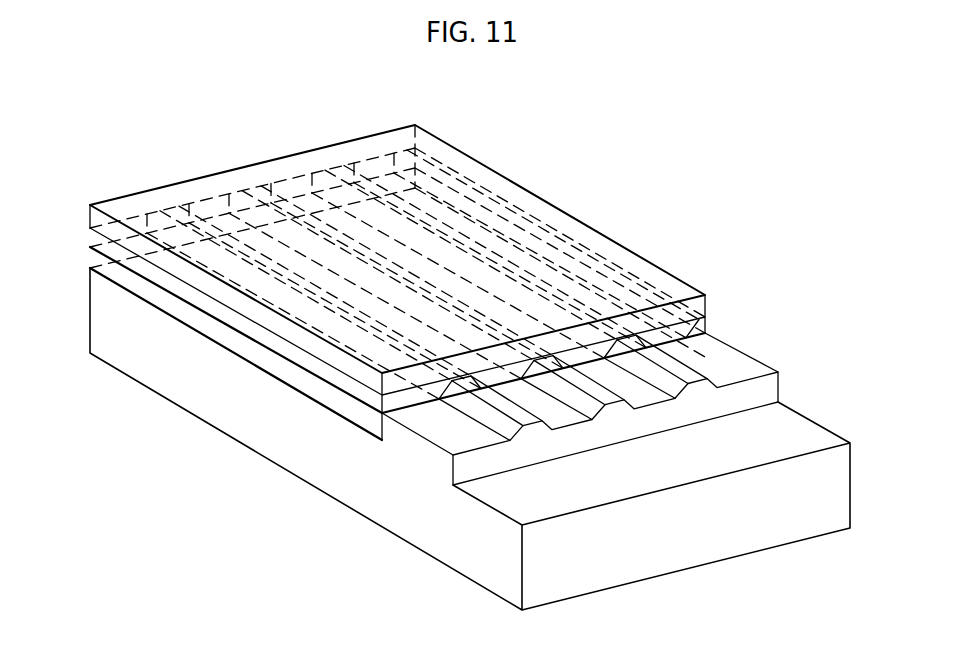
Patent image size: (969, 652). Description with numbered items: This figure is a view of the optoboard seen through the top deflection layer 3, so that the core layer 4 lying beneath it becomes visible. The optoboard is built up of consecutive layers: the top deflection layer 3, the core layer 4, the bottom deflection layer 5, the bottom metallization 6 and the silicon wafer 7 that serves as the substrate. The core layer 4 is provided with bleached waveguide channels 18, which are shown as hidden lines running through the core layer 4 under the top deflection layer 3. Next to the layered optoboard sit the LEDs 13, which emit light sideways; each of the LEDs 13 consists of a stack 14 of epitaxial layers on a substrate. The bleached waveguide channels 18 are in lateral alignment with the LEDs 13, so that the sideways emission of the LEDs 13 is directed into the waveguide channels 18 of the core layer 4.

The top deflection layer 3 is at (90, 214).
The core layer 4 is at (203, 301).
The bottom deflection layer 5 is at (98, 260).
The bottom metallization 6 is at (127, 293).
The silicon wafer 7 is at (838, 485).
The LEDs 13 is at (700, 387).
The stack of epitaxial layers 14 is at (770, 385).
The bleached waveguide channels 18 is at (330, 173).